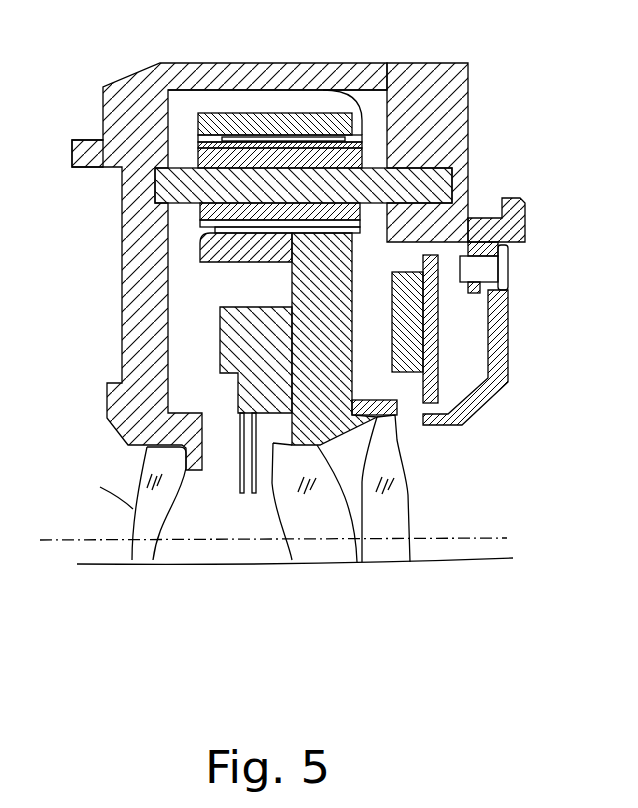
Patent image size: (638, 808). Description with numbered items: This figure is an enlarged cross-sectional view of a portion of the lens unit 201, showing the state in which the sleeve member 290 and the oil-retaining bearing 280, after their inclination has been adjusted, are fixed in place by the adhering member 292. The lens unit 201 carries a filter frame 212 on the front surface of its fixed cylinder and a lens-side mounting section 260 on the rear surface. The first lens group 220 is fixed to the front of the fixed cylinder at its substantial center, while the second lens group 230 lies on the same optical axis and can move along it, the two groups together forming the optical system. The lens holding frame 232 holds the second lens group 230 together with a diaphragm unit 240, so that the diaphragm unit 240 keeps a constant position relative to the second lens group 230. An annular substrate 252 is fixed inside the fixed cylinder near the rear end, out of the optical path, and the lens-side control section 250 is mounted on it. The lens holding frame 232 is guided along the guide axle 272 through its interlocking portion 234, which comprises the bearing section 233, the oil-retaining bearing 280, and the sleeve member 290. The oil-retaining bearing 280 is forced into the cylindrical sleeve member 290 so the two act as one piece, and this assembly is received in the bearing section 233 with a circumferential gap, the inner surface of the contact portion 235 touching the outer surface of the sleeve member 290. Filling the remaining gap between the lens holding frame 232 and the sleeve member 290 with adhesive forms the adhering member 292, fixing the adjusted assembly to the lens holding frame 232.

The lens unit 201 is at (56, 52).
The guide axle 272 is at (188, 163).
The interlocking portion 234 is at (262, 97).
The bearing section 233 is at (263, 112).
The adhering member 292 is at (362, 130).
The sleeve member 290 is at (363, 161).
The oil-retaining bearing 280 is at (397, 158).
The lens-side mounting section 260 is at (508, 197).
The filter frame 212 is at (98, 170).
The contact portion 235 is at (200, 262).
The lens-side control section 250 is at (430, 332).
The diaphragm unit 240 is at (238, 385).
The annular substrate 252 is at (438, 385).
The lens holding frame 232 is at (396, 415).
The first lens group 220 is at (130, 500).
The second lens group 230 is at (408, 495).